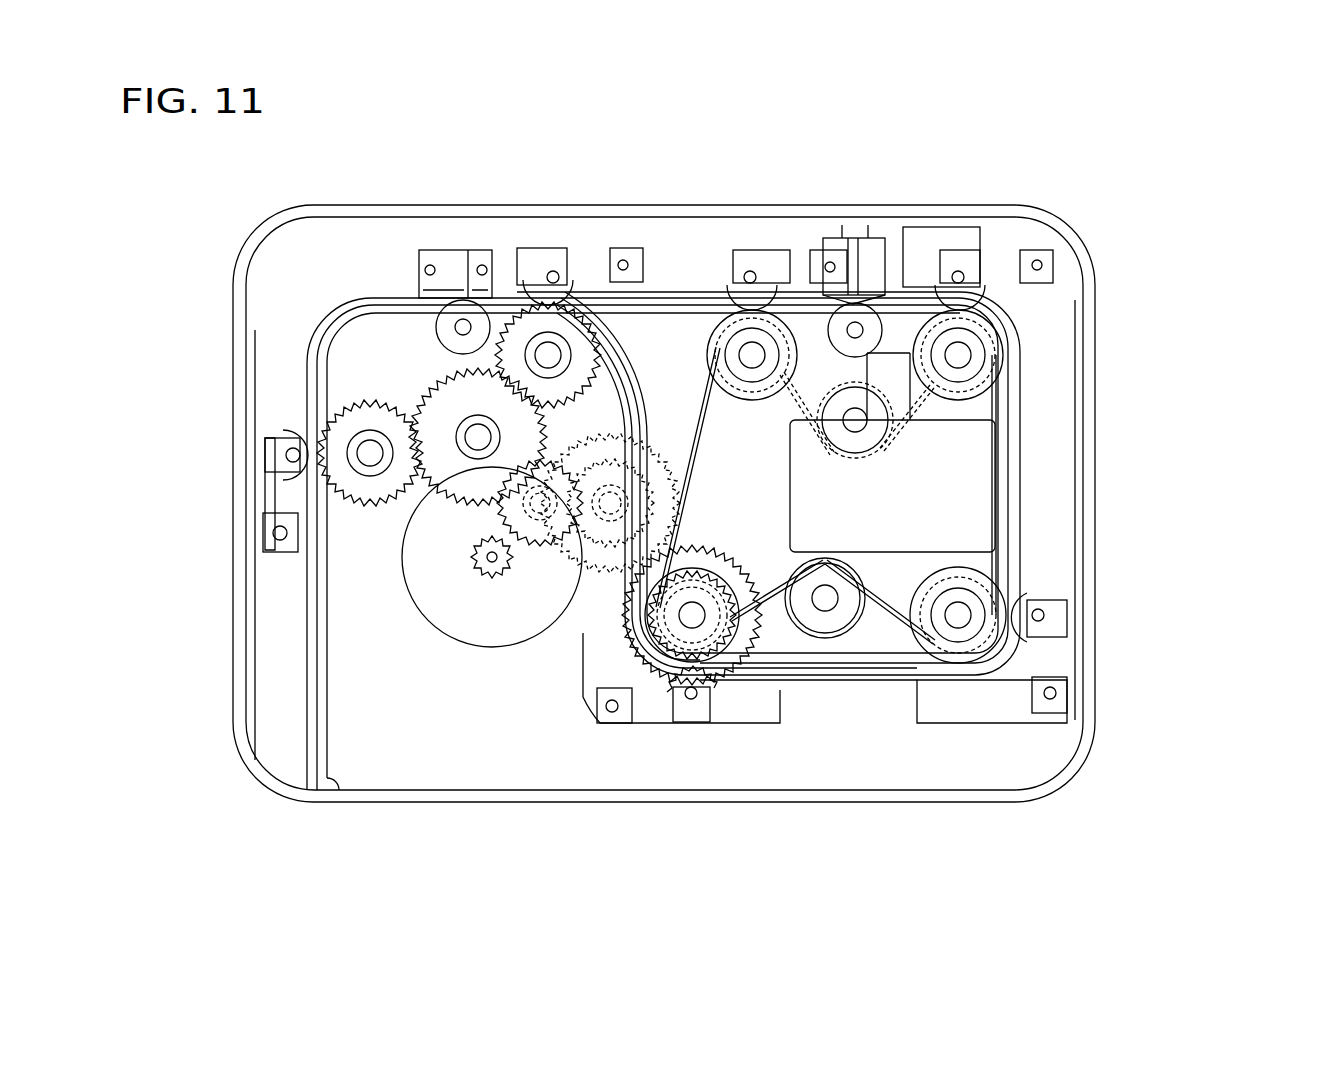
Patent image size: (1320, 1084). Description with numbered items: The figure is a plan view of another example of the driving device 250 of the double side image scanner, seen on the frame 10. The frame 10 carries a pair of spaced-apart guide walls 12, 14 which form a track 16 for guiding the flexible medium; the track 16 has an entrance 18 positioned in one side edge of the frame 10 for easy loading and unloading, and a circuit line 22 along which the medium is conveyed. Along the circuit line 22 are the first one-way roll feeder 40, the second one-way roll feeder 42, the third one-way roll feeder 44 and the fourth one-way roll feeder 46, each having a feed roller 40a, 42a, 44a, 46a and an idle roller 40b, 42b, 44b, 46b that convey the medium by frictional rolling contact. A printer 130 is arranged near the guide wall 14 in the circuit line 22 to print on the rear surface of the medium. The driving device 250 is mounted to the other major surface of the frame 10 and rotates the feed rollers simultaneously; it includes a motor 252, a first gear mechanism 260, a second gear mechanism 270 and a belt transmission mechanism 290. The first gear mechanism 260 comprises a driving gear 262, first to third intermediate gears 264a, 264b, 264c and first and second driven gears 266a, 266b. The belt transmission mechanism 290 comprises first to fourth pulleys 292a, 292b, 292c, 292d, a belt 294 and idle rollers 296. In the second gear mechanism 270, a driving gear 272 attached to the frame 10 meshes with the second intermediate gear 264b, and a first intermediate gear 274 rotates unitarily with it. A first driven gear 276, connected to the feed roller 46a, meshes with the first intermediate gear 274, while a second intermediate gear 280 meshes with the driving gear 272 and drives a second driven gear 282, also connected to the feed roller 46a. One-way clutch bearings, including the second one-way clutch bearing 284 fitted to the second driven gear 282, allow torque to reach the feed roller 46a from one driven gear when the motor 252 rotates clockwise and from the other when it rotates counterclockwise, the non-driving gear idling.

The frame 10 is at (1075, 760).
The guide wall 12 is at (307, 700).
The guide wall 14 is at (357, 307).
The track 16 is at (320, 748).
The entrance 18 is at (323, 730).
The circuit line 22 is at (1013, 477).
The first one-way roll feeder 40 is at (769, 242).
The feed roller 40a is at (772, 323).
The idle roller 40b is at (733, 280).
The second one-way roll feeder 42 is at (1092, 313).
The feed roller 42a is at (990, 348).
The idle roller 42b is at (980, 283).
The third one-way roll feeder 44 is at (1097, 649).
The feed roller 44a is at (960, 663).
The idle roller 44b is at (987, 647).
The fourth one-way roll feeder 46 is at (753, 775).
The feed roller 46a is at (755, 615).
The idle roller 46b is at (717, 700).
The printer 130 is at (965, 450).
The driving device 250 is at (435, 631).
The motor 252 is at (480, 630).
The first gear mechanism 260 is at (352, 397).
The driving gear 262 is at (428, 634).
The first intermediate gear 264a is at (465, 540).
The second intermediate gear 264b is at (440, 512).
The third intermediate gear 264c is at (425, 385).
The first driven gear 266a is at (330, 404).
The second driven gear 266b is at (515, 310).
The second gear mechanism 270 is at (676, 467).
The driving gear 272 is at (606, 470).
The first intermediate gear 274 is at (640, 390).
The first driven gear 276 is at (733, 618).
The second intermediate gear 280 is at (620, 560).
The second driven gear 282 is at (645, 588).
The second one-way clutch bearing 284 is at (678, 625).
The belt transmission mechanism 290 is at (882, 608).
The first pulley 292a is at (820, 337).
The second pulley 292b is at (985, 392).
The third pulley 292c is at (996, 598).
The fourth pulley 292d is at (757, 612).
The belt 294 is at (868, 570).
The idle rollers 296 is at (857, 337).